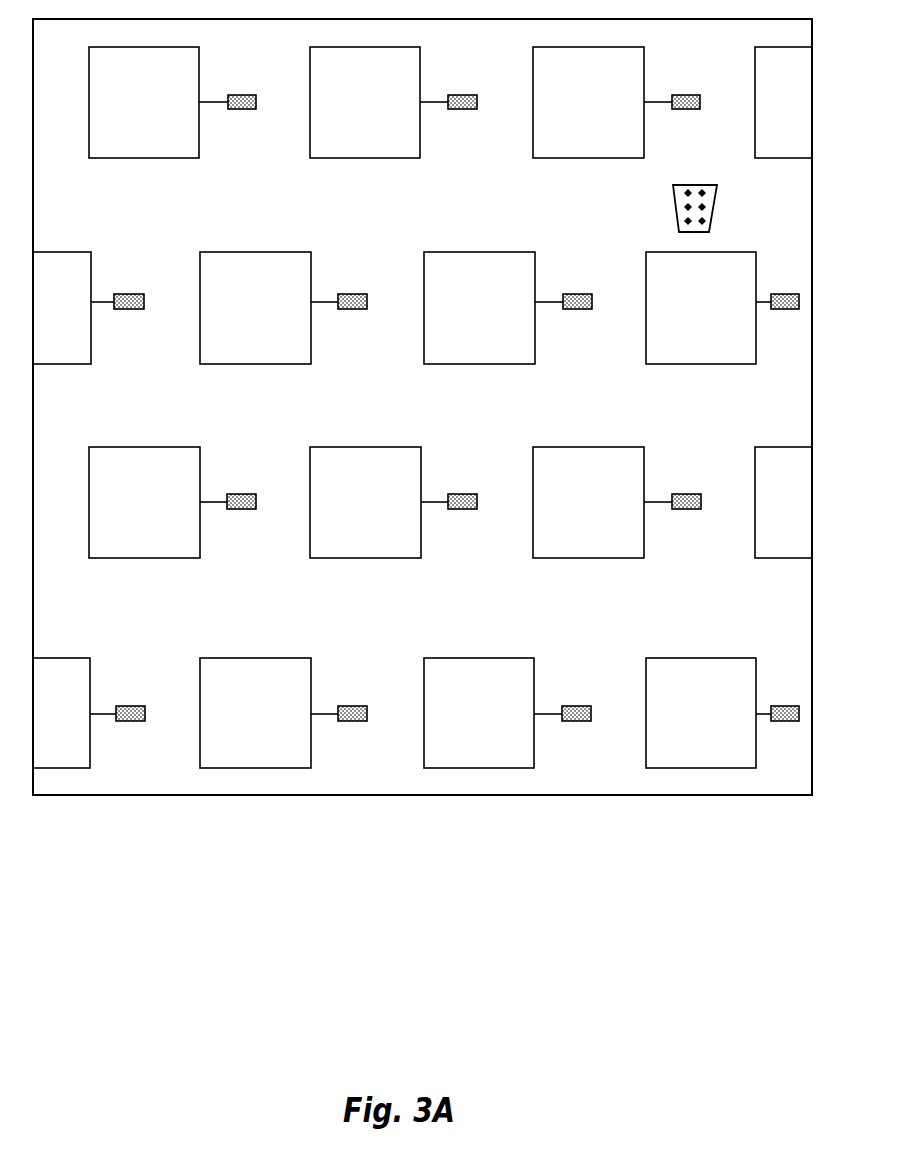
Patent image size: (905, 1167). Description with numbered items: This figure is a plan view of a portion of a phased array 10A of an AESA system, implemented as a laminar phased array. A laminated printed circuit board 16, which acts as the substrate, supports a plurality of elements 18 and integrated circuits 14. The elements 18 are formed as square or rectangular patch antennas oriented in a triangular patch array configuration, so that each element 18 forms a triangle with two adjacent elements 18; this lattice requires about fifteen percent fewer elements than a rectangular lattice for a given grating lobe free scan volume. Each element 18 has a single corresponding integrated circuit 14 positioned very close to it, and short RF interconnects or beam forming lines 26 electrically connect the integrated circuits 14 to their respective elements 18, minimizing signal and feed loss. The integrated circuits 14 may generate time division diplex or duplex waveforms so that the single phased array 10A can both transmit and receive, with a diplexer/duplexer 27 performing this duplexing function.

The phased array 10A is at (422, 458).
The integrated circuit 14 is at (241, 93).
The laminated printed circuit board 16 is at (376, 818).
The element 18 is at (422, 407).
The beam forming line 26 is at (220, 103).
The diplexer/duplexer 27 is at (719, 208).